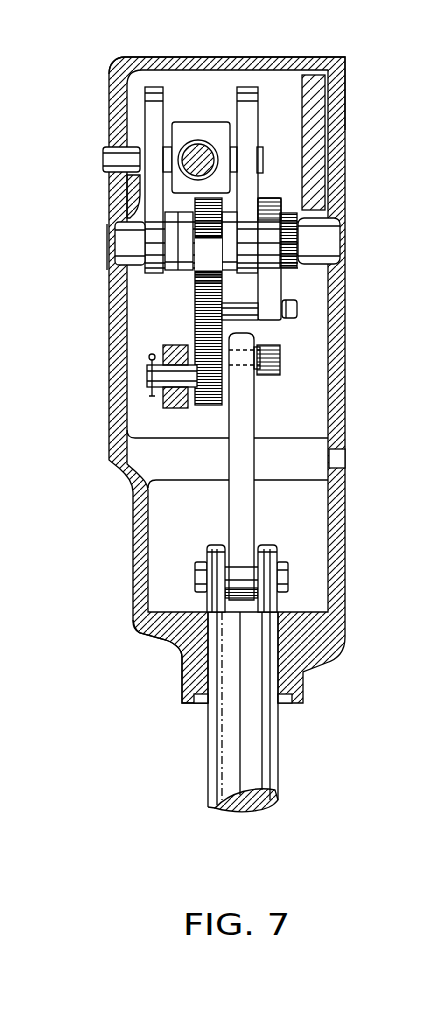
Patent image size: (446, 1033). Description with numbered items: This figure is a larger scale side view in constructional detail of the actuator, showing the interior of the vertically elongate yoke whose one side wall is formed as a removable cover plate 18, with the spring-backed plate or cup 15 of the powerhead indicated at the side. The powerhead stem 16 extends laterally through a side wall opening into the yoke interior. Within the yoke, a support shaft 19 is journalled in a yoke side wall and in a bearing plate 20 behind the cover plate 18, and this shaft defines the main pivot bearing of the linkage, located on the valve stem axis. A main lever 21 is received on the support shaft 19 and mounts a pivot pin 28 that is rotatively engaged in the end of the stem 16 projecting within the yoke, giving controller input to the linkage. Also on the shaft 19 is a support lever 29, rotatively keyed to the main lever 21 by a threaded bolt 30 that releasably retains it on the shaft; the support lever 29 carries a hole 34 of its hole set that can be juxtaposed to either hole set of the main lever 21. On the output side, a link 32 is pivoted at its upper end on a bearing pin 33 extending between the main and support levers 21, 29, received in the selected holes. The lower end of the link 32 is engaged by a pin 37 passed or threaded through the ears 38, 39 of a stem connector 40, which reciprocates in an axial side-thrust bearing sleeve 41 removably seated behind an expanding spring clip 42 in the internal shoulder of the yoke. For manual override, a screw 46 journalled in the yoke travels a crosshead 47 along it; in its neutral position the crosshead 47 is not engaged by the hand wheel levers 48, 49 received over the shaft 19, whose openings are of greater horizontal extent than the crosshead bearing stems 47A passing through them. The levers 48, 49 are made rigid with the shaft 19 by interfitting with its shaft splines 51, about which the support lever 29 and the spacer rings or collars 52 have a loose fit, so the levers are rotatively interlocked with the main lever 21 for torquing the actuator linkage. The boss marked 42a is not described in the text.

The plate or cup 15 is at (345, 530).
The stem 16 is at (182, 405).
The cover plate 18 is at (337, 110).
The support shaft 19 is at (343, 233).
The bearing plate 20 is at (323, 167).
The main lever 21 is at (197, 315).
The pivot pin 28 is at (131, 389).
The support lever 29 is at (280, 344).
The threaded bolt 30 is at (248, 318).
The link 32 is at (248, 412).
The bearing pin 33 is at (257, 375).
The hole 34 is at (108, 265).
The pin 37 is at (289, 585).
The ear 38 is at (217, 545).
The ear 39 is at (267, 545).
The stem connector 40 is at (279, 769).
The side-thrust bearing sleeve 41 is at (182, 660).
The expanding spring clip 42 is at (288, 706).
The pin 42a is at (103, 158).
The screw 46 is at (191, 140).
The crosshead 47 is at (201, 111).
The crosshead bearing stem 47A is at (260, 165).
The hand wheel lever 48 is at (153, 86).
The hand wheel lever 49 is at (244, 86).
The shaft spline 51 is at (290, 272).
The spacer ring or collar 52 is at (225, 277).